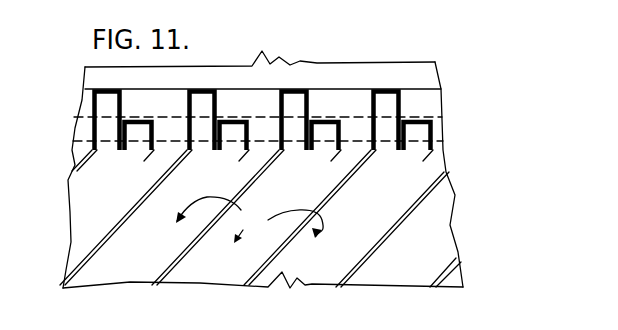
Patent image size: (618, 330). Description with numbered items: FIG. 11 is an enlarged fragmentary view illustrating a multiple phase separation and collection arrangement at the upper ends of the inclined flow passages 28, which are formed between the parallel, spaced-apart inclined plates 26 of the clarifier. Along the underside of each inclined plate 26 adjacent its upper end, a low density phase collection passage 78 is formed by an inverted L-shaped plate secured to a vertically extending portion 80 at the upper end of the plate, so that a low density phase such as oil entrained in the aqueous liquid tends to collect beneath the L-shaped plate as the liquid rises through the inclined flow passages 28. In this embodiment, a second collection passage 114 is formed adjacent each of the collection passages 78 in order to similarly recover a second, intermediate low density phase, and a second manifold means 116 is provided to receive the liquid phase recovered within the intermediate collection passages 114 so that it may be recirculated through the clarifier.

The plates 26 is at (128, 211).
The inclined flow passages 28 is at (249, 220).
The low density phase collection passage 78 is at (127, 99).
The vertically extending portion 80 is at (92, 103).
The second collection passage 114 is at (149, 150).
The second manifold means 116 is at (80, 129).